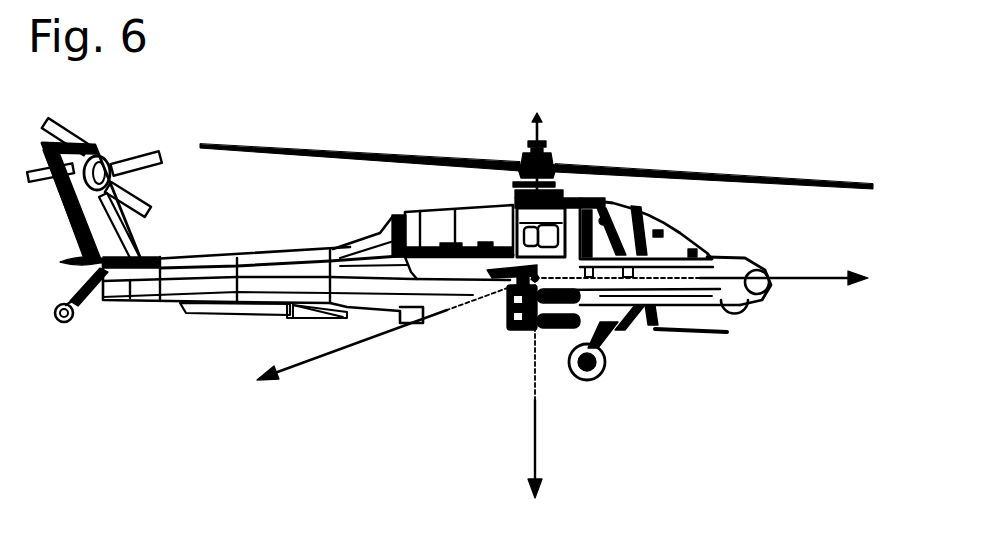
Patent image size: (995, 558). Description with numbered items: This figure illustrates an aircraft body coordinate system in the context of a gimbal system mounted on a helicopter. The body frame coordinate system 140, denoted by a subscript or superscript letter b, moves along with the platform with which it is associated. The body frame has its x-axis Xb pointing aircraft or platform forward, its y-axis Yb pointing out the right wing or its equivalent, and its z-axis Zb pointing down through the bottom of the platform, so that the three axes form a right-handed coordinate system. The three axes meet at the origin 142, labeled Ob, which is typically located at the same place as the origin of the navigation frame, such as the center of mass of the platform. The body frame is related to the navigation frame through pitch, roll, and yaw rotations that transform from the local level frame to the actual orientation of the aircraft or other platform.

The body frame coordinate system 140 is at (390, 398).
The origin 142 is at (534, 276).
The x-axis Xb is at (804, 278).
The y-axis Yb is at (333, 358).
The z-axis Zb is at (540, 464).
The body frame origin Ob is at (531, 281).